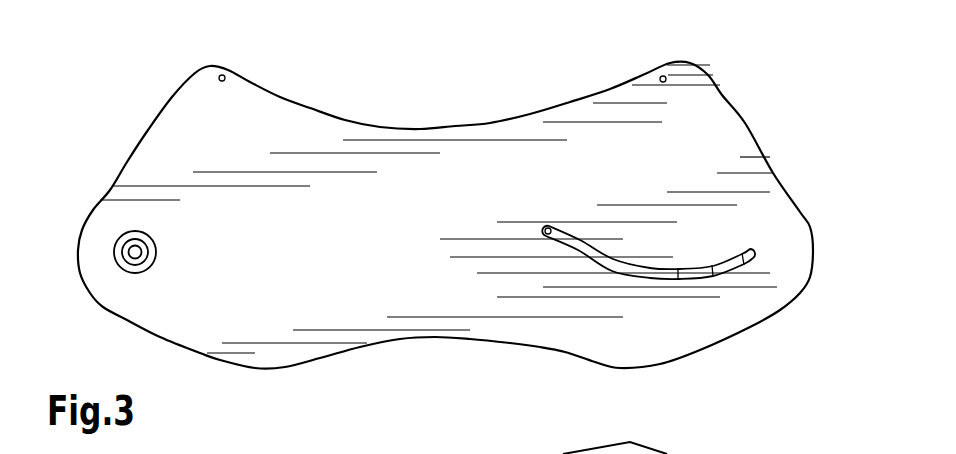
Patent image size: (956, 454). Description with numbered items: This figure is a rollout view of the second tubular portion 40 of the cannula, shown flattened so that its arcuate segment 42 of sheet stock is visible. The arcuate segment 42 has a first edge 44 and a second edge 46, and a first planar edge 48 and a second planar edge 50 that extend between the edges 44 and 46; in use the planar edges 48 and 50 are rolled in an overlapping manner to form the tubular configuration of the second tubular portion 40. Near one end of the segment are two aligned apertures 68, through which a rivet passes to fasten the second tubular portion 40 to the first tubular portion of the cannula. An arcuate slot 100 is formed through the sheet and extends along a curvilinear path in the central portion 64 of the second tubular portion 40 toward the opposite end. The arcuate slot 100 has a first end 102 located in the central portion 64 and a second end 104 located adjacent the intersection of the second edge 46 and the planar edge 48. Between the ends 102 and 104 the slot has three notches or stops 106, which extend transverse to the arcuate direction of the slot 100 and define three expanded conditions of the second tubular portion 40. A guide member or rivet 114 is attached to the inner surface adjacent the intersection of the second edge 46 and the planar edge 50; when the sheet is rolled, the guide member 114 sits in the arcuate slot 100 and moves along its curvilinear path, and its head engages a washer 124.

The second tubular portion 40 is at (207, 377).
The arcuate segment 42 is at (453, 160).
The first edge 44 is at (550, 113).
The second edge 46 is at (627, 370).
The first planar edge 48 is at (747, 123).
The second planar edge 50 is at (138, 140).
The central portion 64 is at (348, 163).
The apertures 68 is at (224, 74).
The arcuate slot 100 is at (603, 263).
The first end 102 is at (546, 233).
The second end 104 is at (753, 247).
The notches or stops 106 is at (743, 256).
The guide member or rivet 114 is at (129, 263).
The washer 124 is at (135, 232).